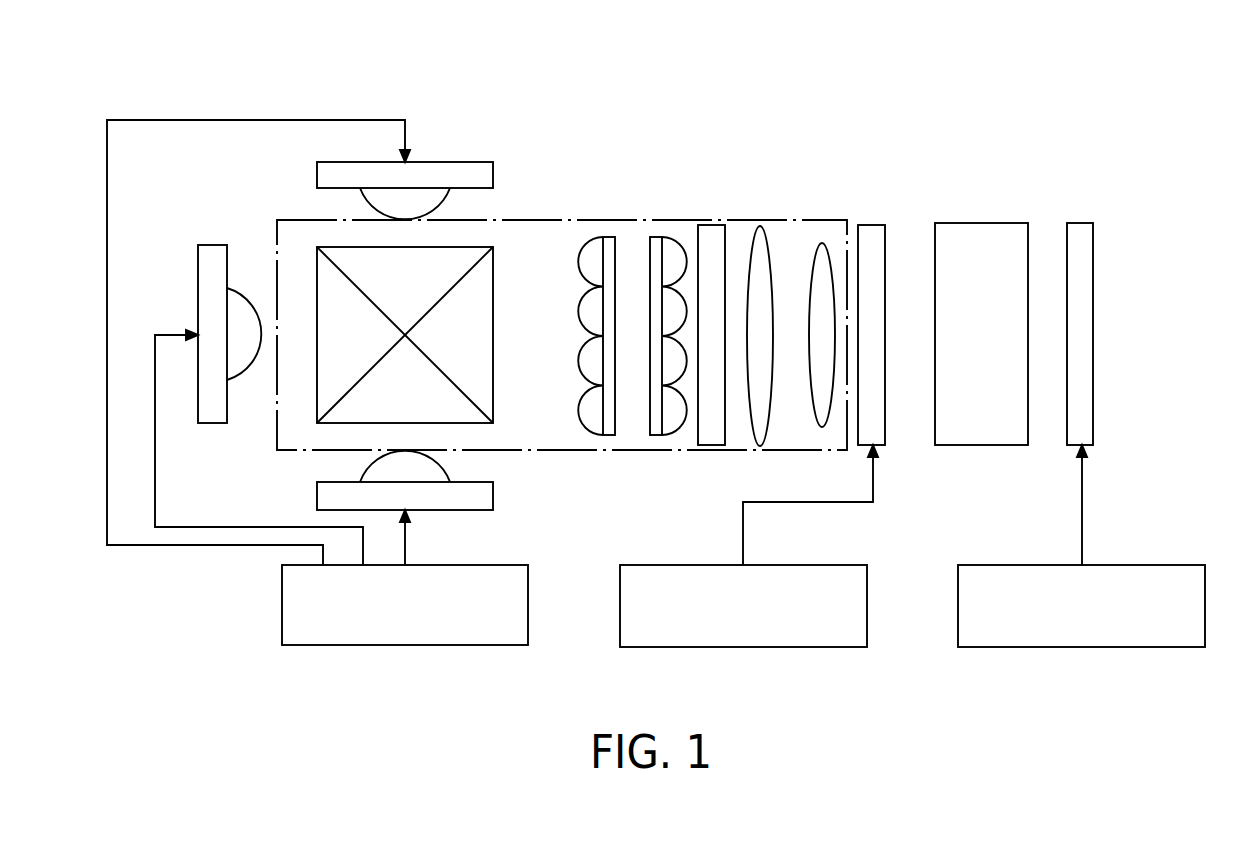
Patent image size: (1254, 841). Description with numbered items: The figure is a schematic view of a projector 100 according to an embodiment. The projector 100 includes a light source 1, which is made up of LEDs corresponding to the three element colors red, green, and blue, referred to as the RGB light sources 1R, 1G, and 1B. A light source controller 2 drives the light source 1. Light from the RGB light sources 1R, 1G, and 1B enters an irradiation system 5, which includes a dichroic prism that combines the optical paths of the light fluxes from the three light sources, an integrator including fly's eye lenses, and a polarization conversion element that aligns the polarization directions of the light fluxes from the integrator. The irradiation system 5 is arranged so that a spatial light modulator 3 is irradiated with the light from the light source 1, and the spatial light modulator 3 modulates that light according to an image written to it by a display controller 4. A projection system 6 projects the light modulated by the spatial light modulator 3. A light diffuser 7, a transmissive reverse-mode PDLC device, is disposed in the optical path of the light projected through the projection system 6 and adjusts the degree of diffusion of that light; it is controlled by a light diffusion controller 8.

The projector 100 is at (1050, 128).
The light source 1 is at (400, 336).
The R light source 1R is at (493, 173).
The G light source 1G is at (216, 245).
The B light source 1B is at (493, 493).
The light source controller 2 is at (480, 565).
The spatial light modulator 3 is at (871, 225).
The display controller 4 is at (820, 565).
The irradiation system 5 is at (797, 220).
The projection system 6 is at (978, 223).
The light diffuser 7 is at (1079, 223).
The light diffusion controller 8 is at (1160, 565).